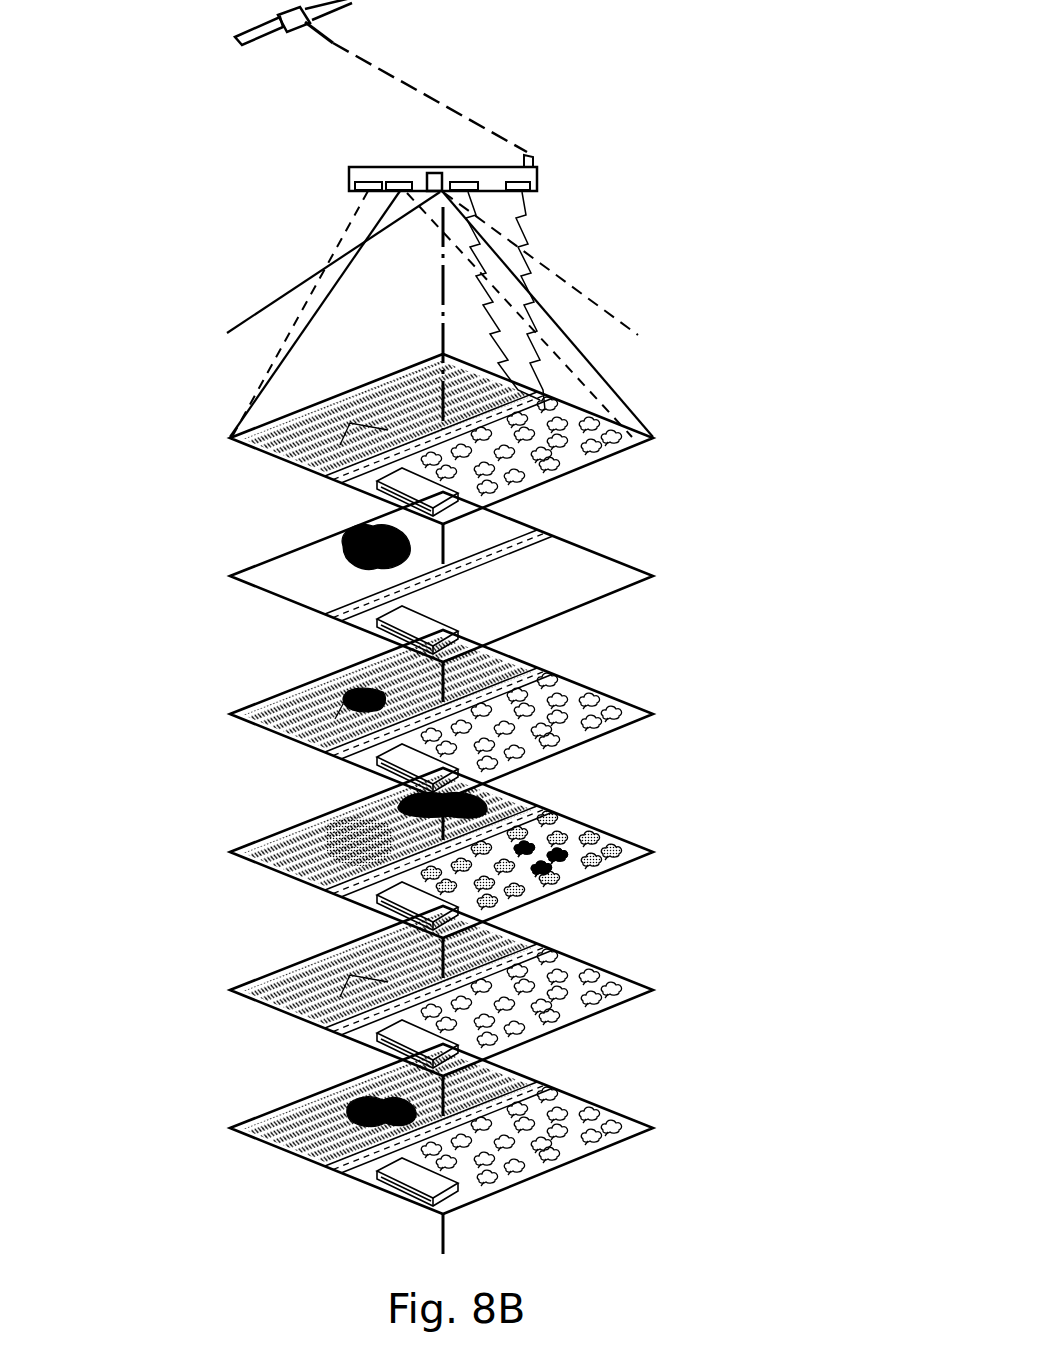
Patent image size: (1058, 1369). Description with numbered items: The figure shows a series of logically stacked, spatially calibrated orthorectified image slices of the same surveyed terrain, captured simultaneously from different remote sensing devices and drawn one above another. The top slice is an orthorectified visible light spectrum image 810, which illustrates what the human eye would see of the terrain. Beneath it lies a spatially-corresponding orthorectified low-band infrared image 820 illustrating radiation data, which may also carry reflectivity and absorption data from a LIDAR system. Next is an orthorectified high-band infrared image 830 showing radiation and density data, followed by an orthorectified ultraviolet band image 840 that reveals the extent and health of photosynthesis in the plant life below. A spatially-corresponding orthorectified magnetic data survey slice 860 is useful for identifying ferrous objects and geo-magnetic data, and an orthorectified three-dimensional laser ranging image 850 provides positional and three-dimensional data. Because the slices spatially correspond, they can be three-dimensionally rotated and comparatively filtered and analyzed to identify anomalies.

The orthorectified visible light spectrum image 810 is at (476, 439).
The orthorectified low-band infrared image 820 is at (476, 577).
The orthorectified high-band infrared image 830 is at (476, 715).
The orthorectified ultraviolet band image 840 is at (476, 853).
The orthorectified three-dimensional laser ranging image 850 is at (476, 1129).
The orthorectified magnetic data survey slice 860 is at (476, 991).